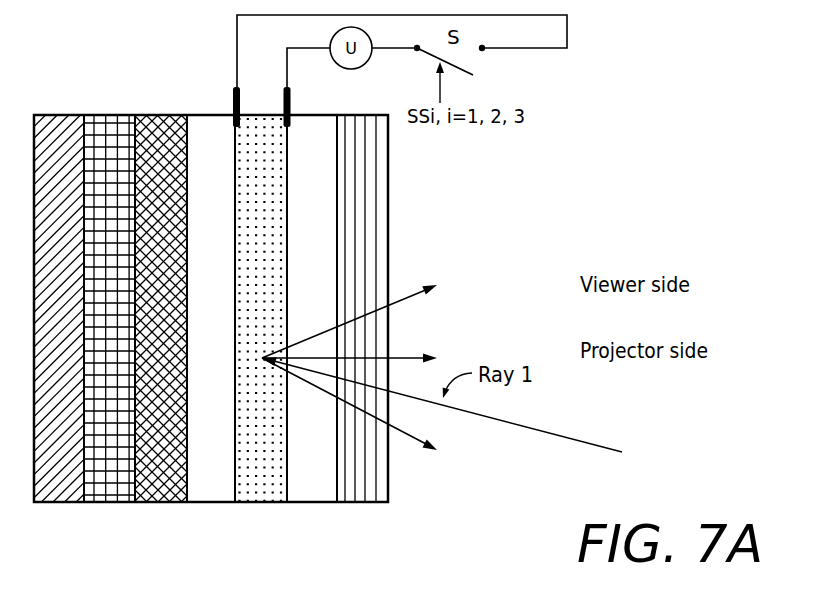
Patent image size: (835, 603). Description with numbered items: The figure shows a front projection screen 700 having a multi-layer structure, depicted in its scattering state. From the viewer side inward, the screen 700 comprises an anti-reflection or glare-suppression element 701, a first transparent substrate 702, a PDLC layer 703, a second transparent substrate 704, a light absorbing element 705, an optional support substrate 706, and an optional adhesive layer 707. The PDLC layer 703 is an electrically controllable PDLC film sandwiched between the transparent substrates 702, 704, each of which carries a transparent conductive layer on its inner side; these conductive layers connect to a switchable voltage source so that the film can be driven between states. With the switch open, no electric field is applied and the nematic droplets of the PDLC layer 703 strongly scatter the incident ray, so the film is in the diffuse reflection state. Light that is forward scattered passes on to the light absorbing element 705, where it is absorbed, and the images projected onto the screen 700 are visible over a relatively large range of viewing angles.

The screen 700 is at (658, 125).
The anti-reflection element 701 is at (363, 468).
The transparent substrate 702 is at (302, 468).
The PDLC layer 703 is at (268, 468).
The transparent substrate 704 is at (202, 468).
The light absorbing element 705 is at (162, 468).
The support substrate 706 is at (100, 468).
The adhesive layer 707 is at (62, 468).